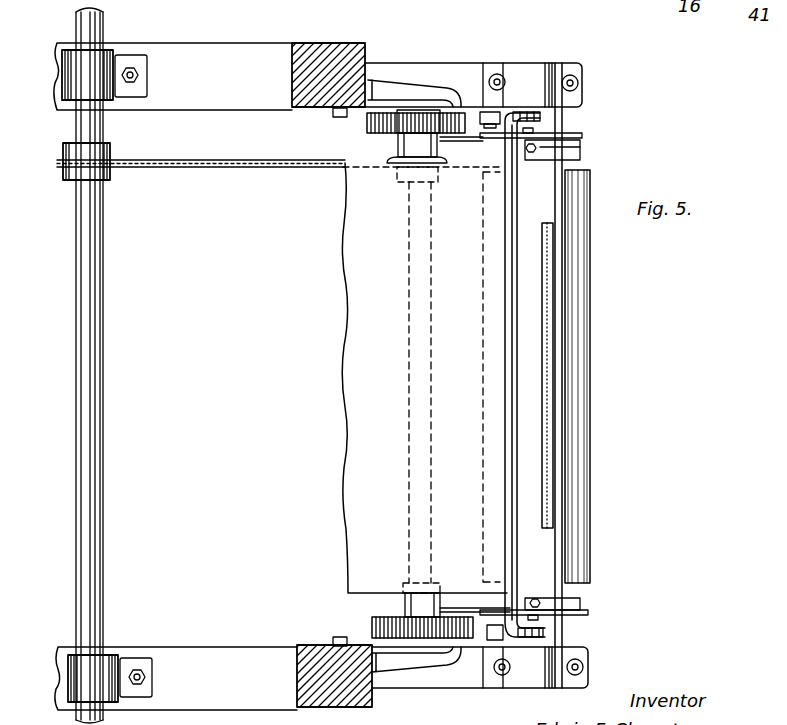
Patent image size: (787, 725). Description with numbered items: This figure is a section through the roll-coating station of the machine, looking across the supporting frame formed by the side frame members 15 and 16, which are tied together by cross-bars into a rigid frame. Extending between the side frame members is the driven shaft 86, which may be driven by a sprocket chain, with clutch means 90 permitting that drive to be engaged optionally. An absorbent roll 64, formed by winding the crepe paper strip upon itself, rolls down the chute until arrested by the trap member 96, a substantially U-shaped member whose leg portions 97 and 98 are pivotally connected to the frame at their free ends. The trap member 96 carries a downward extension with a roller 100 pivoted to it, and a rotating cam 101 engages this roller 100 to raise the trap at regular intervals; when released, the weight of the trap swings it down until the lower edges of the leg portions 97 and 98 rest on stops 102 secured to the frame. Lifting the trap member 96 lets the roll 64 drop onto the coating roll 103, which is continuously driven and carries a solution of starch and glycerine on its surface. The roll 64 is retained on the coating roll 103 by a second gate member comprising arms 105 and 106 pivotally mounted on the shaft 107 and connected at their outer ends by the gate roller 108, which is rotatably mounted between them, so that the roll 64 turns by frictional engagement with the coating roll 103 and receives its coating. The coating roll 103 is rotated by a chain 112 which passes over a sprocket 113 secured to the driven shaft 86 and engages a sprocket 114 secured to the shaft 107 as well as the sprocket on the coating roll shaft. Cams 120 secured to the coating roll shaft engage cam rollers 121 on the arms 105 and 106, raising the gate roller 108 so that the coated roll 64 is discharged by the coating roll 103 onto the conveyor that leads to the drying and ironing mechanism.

The side frame member 15 is at (266, 660).
The side frame member 16 is at (316, 52).
The absorbent roll 64 is at (545, 291).
The driven shaft 86 is at (97, 328).
The clutch means 90 is at (357, 309).
The trap member 96 is at (507, 425).
The leg portion 97 is at (367, 113).
The leg portion 98 is at (364, 641).
The roller 100 is at (488, 110).
The rotating cam 101 is at (545, 117).
The stop 102 is at (424, 90).
The coating roll 103 is at (590, 373).
The arm 105 is at (481, 142).
The arm 106 is at (460, 608).
The shaft 107 is at (420, 344).
The gate roller 108 is at (563, 539).
The chain 112 is at (205, 170).
The sprocket 113 is at (112, 150).
The sprocket 114 is at (382, 163).
The rotating cam 120 is at (577, 151).
The cam roller 121 is at (548, 133).